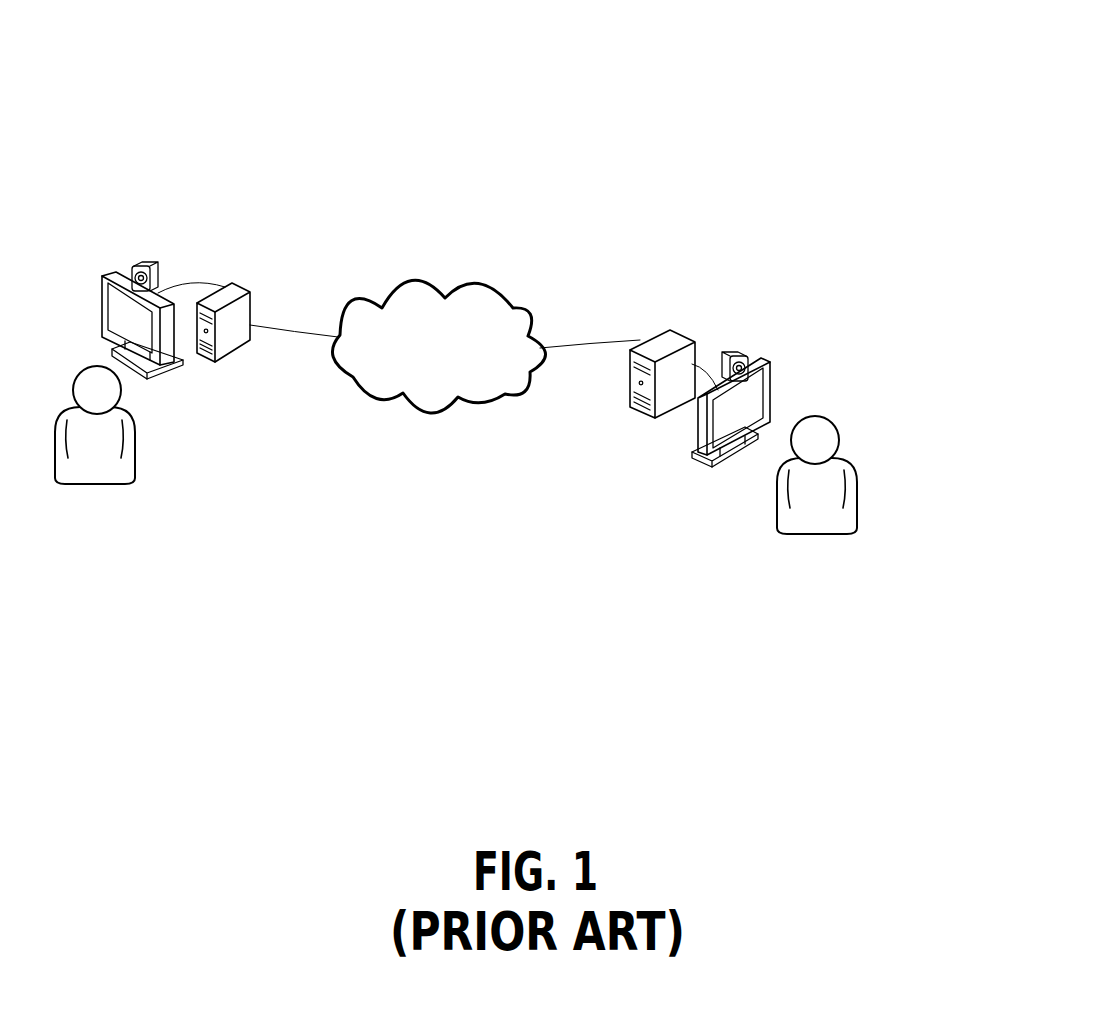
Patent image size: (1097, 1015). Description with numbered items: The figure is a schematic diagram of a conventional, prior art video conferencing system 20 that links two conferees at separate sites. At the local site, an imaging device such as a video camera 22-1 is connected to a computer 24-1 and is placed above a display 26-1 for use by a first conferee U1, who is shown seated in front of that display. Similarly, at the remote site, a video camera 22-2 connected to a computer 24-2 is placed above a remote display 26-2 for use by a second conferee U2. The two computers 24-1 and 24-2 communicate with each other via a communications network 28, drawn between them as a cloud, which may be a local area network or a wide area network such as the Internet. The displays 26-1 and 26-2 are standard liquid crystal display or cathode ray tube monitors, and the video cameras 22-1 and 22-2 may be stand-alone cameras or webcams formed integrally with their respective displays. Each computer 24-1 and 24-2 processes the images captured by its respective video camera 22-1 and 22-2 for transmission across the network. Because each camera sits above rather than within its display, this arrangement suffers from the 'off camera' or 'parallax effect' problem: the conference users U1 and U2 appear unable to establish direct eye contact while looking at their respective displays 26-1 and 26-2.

The video conferencing system 20 is at (668, 132).
The video camera 22-1 is at (150, 270).
The computer 24-1 is at (246, 300).
The display 26-1 is at (170, 370).
The communications network 28 is at (450, 296).
The computer 24-2 is at (660, 335).
The video camera 22-2 is at (740, 354).
The remote display 26-2 is at (698, 430).
The first conferee U1 is at (72, 470).
The second conferee U2 is at (778, 528).